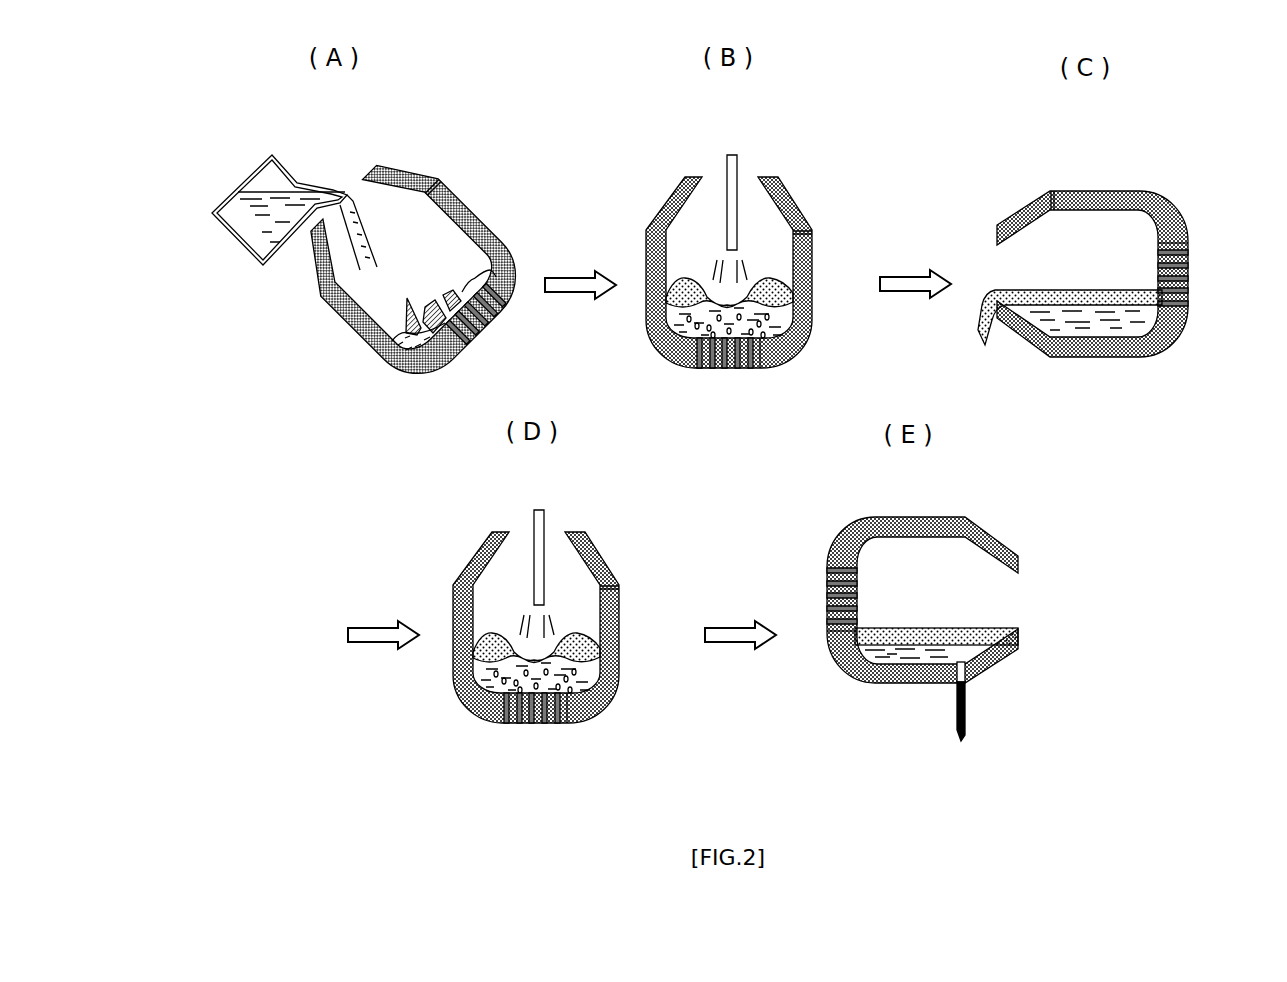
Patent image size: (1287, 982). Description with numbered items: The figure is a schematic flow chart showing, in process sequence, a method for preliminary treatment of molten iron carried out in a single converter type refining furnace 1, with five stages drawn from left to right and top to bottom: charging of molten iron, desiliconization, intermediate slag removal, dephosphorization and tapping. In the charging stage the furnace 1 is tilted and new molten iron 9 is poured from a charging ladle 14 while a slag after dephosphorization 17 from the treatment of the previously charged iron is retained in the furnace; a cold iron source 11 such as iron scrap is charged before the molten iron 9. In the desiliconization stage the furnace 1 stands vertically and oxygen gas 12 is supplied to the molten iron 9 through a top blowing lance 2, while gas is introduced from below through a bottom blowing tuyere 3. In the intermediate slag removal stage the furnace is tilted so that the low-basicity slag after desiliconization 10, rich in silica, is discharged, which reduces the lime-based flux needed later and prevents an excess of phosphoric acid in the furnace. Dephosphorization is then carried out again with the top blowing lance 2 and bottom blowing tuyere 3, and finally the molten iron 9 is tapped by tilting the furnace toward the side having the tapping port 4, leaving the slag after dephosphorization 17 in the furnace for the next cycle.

The converter type refining furnace 1 is at (478, 203).
The top blowing lance 2 is at (740, 177).
The bottom blowing tuyere 3 is at (490, 323).
The tapping port 4 is at (621, 587).
The molten iron 9 is at (245, 232).
The slag after desiliconization 10 is at (795, 293).
The cold iron source 11 is at (407, 310).
The oxygen gas 12 is at (744, 267).
The charging ladle 14 is at (285, 172).
The slag after dephosphorization 17 is at (463, 283).